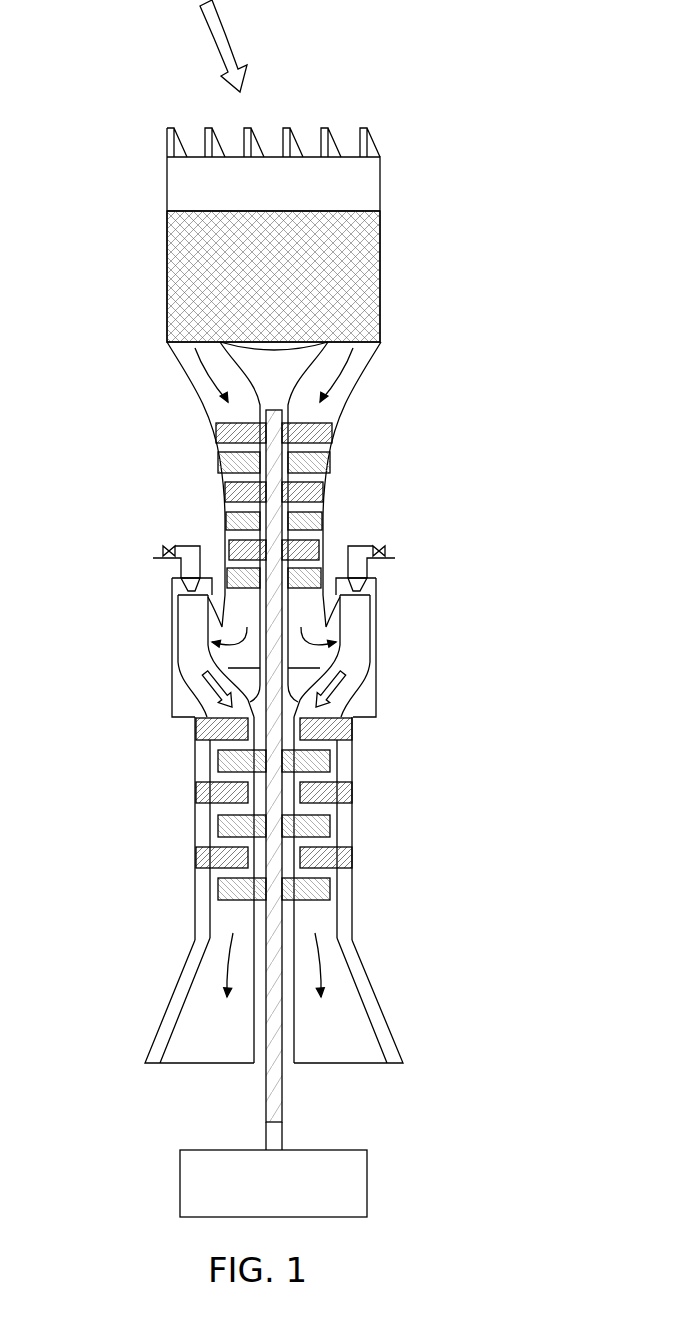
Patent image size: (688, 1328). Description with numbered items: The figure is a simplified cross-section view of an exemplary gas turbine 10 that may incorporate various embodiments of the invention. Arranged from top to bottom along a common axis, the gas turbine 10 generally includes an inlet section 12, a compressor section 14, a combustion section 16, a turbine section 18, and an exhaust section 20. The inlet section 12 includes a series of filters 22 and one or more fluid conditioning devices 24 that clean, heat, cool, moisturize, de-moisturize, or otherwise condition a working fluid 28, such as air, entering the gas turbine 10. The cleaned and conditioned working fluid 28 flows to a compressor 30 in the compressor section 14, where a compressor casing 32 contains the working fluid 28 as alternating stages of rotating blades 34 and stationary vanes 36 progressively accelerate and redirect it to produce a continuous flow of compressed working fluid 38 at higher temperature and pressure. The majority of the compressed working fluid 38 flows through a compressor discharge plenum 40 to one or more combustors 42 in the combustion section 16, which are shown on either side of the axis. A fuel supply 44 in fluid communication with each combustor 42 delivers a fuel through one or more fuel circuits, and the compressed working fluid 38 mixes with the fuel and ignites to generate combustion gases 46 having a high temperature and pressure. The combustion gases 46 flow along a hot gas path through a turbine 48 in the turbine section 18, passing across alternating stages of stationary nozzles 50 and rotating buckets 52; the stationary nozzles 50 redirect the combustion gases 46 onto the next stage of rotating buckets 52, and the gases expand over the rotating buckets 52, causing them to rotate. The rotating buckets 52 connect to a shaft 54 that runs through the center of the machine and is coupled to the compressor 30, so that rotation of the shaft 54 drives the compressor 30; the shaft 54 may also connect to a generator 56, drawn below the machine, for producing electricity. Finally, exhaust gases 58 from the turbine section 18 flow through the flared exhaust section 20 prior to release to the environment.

The gas turbine 10 is at (472, 90).
The inlet section 12 is at (90, 155).
The compressor section 14 is at (123, 342).
The combustion section 16 is at (93, 578).
The turbine section 18 is at (125, 721).
The exhaust section 20 is at (93, 893).
The filters 22 is at (353, 142).
The fluid conditioning device 24 is at (167, 250).
The working fluid 28 is at (236, 43).
The compressor 30 is at (357, 423).
The compressor casing 32 is at (197, 407).
The rotating blades 34 is at (213, 433).
The stationary vanes 36 is at (325, 518).
The compressed working fluid 38 is at (327, 620).
The compressor discharge plenum 40 is at (274, 654).
The combustor 42 is at (172, 647).
The fuel supply 44 is at (385, 547).
The combustion gases 46 is at (209, 694).
The turbine 48 is at (353, 825).
The stationary nozzles 50 is at (353, 728).
The rotating buckets 52 is at (215, 824).
The shaft 54 is at (265, 1088).
The generator 56 is at (180, 1185).
The exhaust gases 58 is at (315, 960).